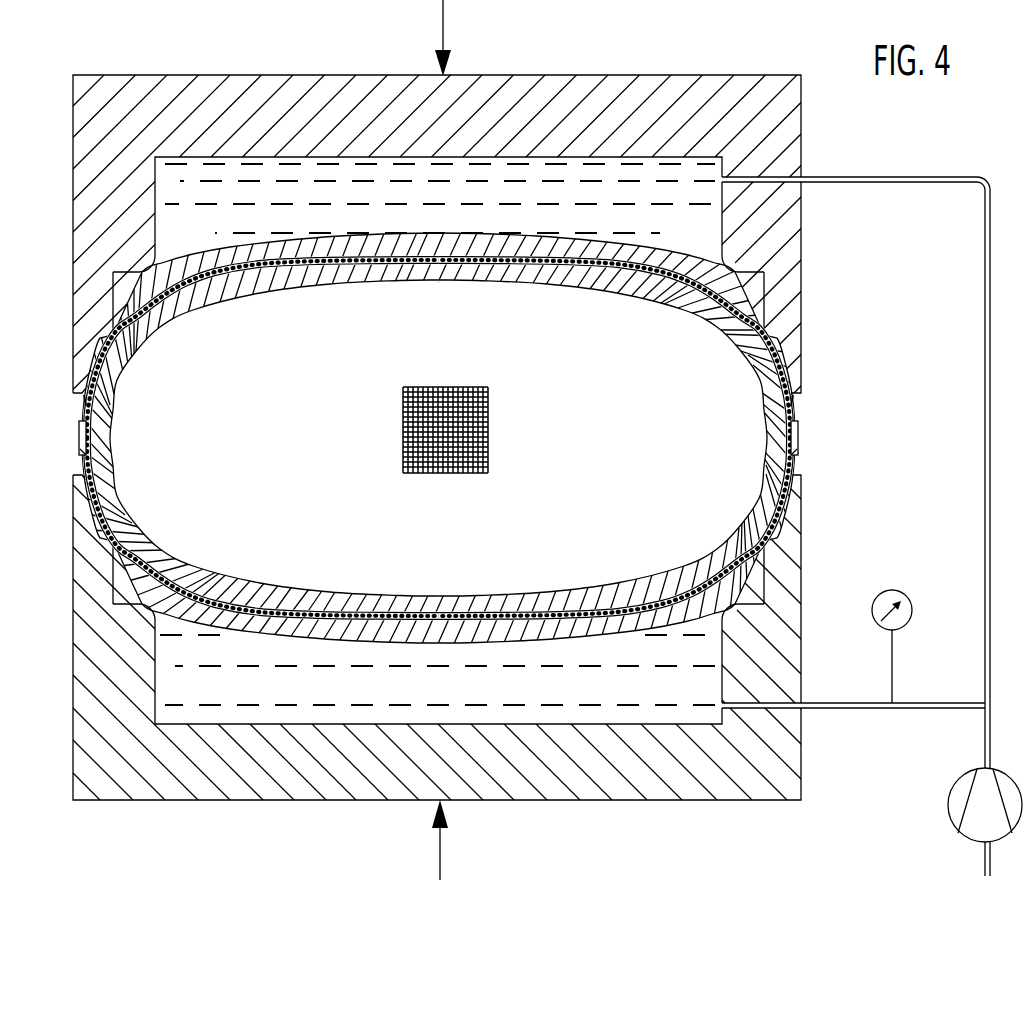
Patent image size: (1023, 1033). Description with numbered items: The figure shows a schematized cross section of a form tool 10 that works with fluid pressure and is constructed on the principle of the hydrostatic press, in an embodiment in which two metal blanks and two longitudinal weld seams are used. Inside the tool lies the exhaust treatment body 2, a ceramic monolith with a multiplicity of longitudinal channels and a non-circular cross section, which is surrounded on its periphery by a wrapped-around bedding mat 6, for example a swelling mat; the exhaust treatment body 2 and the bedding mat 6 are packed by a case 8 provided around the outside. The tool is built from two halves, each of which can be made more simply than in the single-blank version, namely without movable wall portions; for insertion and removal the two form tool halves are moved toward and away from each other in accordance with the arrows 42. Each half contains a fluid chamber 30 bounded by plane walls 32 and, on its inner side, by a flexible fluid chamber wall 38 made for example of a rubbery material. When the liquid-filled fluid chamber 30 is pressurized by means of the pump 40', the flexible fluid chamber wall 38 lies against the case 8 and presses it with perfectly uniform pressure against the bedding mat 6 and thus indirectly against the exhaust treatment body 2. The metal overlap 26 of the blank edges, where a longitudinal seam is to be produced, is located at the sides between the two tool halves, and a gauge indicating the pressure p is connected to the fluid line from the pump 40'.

The exhaust treatment body 2 is at (452, 371).
The bedding mat 6 is at (508, 280).
The case 8 is at (84, 402).
The form tool 10 is at (750, 68).
The metal overlap 26 is at (73, 438).
The fluid chamber 30 is at (625, 180).
The plane walls 32 is at (288, 92).
The flexible fluid chamber wall 38 is at (222, 266).
The pump 40' is at (872, 526).
The arrows 42 is at (445, 34).
The pressure gauge p is at (897, 646).